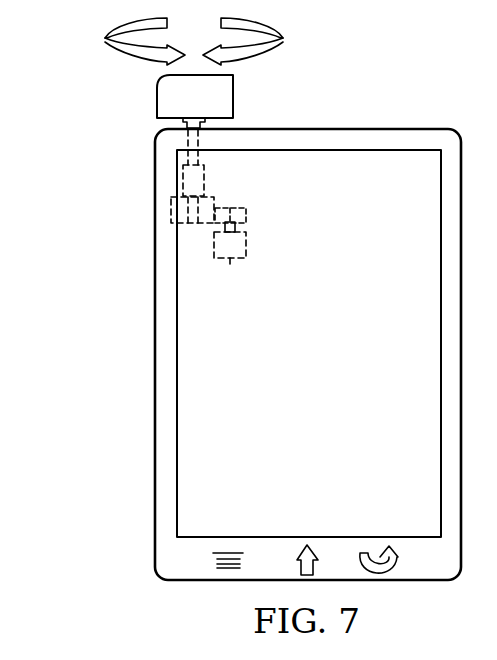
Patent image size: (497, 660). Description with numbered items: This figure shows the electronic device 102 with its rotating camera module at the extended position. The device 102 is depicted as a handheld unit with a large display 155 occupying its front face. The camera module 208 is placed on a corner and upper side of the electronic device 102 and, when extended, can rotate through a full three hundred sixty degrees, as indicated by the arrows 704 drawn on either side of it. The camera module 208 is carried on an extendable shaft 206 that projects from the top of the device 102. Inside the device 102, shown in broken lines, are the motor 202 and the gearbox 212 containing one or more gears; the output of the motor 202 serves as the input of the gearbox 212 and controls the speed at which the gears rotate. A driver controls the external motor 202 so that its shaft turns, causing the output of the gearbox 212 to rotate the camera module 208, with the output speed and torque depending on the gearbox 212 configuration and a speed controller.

The electronic device 102 is at (203, 580).
The display 155 is at (330, 410).
The motor 202 is at (230, 264).
The extendable shaft 206 is at (186, 133).
The camera module 208 is at (157, 98).
The gearbox 212 is at (262, 200).
The arrows 704 is at (105, 35).